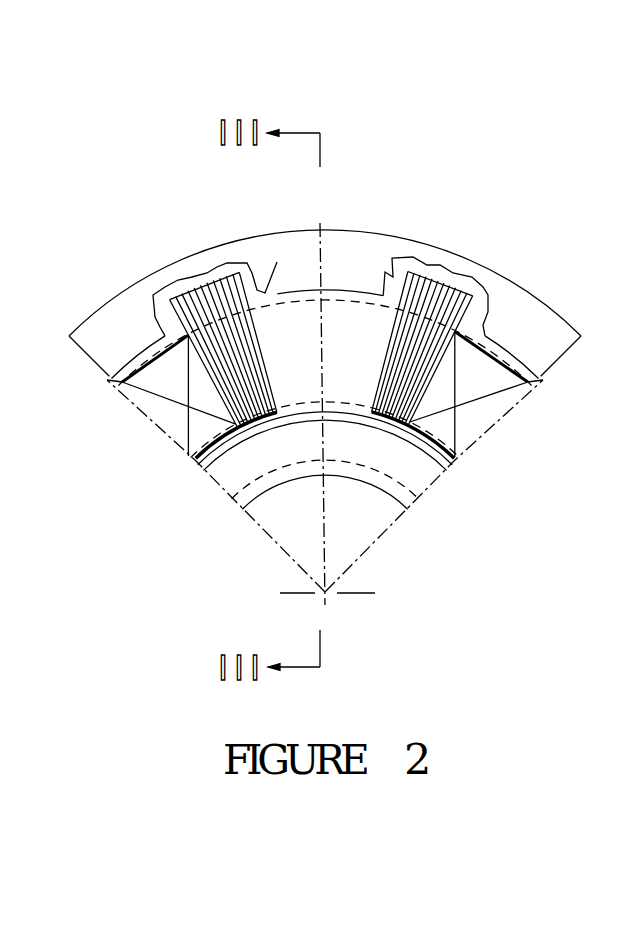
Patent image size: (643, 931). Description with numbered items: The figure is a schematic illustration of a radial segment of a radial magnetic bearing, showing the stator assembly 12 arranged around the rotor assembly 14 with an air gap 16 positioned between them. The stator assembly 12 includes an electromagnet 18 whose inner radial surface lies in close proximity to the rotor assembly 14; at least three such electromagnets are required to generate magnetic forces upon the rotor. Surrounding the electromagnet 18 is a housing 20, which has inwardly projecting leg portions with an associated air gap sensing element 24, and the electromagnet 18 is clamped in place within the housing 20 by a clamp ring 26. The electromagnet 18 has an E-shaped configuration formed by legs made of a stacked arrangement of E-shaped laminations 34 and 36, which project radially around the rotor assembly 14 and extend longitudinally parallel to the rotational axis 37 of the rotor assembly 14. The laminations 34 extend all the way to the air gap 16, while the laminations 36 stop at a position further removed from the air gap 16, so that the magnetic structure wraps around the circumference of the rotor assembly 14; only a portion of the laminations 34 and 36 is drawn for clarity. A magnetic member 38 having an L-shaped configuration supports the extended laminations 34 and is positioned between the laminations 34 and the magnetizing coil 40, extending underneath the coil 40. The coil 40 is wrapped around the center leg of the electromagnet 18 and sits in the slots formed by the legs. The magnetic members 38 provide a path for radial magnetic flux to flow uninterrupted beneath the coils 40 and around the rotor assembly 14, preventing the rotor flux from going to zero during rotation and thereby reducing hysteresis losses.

The stator assembly 12 is at (427, 243).
The rotor assembly 14 is at (436, 487).
The air gap 16 is at (452, 463).
The electromagnet 18 is at (307, 333).
The housing 20 is at (350, 262).
The air gap sensing element 24 is at (500, 352).
The clamp ring 26 is at (150, 358).
The laminations 34 is at (277, 262).
The laminations 36 is at (198, 277).
The rotational axis 37 is at (360, 597).
The magnetic member 38 is at (470, 298).
The magnetizing coil 40 is at (480, 403).